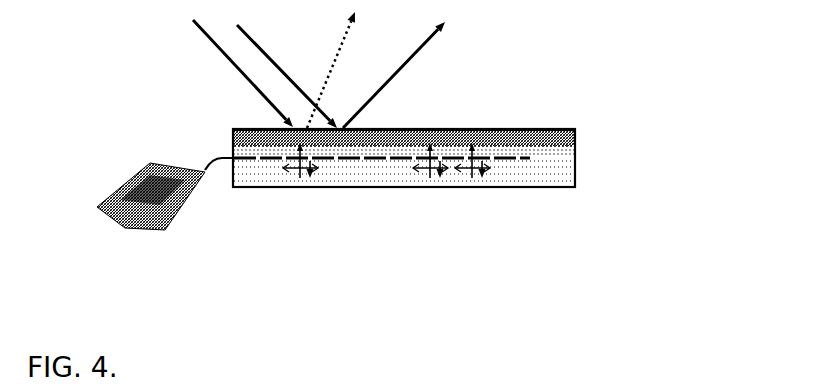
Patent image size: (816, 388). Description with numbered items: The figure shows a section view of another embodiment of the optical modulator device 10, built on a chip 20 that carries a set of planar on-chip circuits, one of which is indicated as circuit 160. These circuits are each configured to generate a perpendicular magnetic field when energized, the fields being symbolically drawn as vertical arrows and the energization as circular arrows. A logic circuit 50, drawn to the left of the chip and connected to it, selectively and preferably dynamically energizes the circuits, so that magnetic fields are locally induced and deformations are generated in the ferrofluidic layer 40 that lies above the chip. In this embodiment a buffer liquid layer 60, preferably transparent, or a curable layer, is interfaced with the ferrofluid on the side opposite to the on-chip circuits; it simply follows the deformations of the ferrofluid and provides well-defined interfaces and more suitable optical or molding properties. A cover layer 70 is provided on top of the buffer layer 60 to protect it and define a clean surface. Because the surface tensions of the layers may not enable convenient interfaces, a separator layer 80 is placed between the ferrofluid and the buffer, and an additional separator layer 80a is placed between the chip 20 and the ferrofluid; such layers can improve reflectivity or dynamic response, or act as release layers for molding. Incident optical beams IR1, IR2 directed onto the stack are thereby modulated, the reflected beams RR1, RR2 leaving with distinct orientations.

The optical modulator device 10 is at (438, 205).
The chip 20 is at (570, 177).
The ferrofluidic layer 40 is at (575, 152).
The logic circuit 50 is at (150, 237).
The buffer liquid layer 60 is at (533, 142).
The cover layer 70 is at (535, 129).
The separator layer 80 is at (563, 147).
The additional separator layer 80a is at (575, 158).
The planar on-chip circuit 160 is at (510, 158).
The incident optical beam IR1 is at (219, 73).
The incident optical beam IR2 is at (287, 76).
The reflected beam RR1 is at (357, 65).
The reflected beam RR2 is at (417, 75).